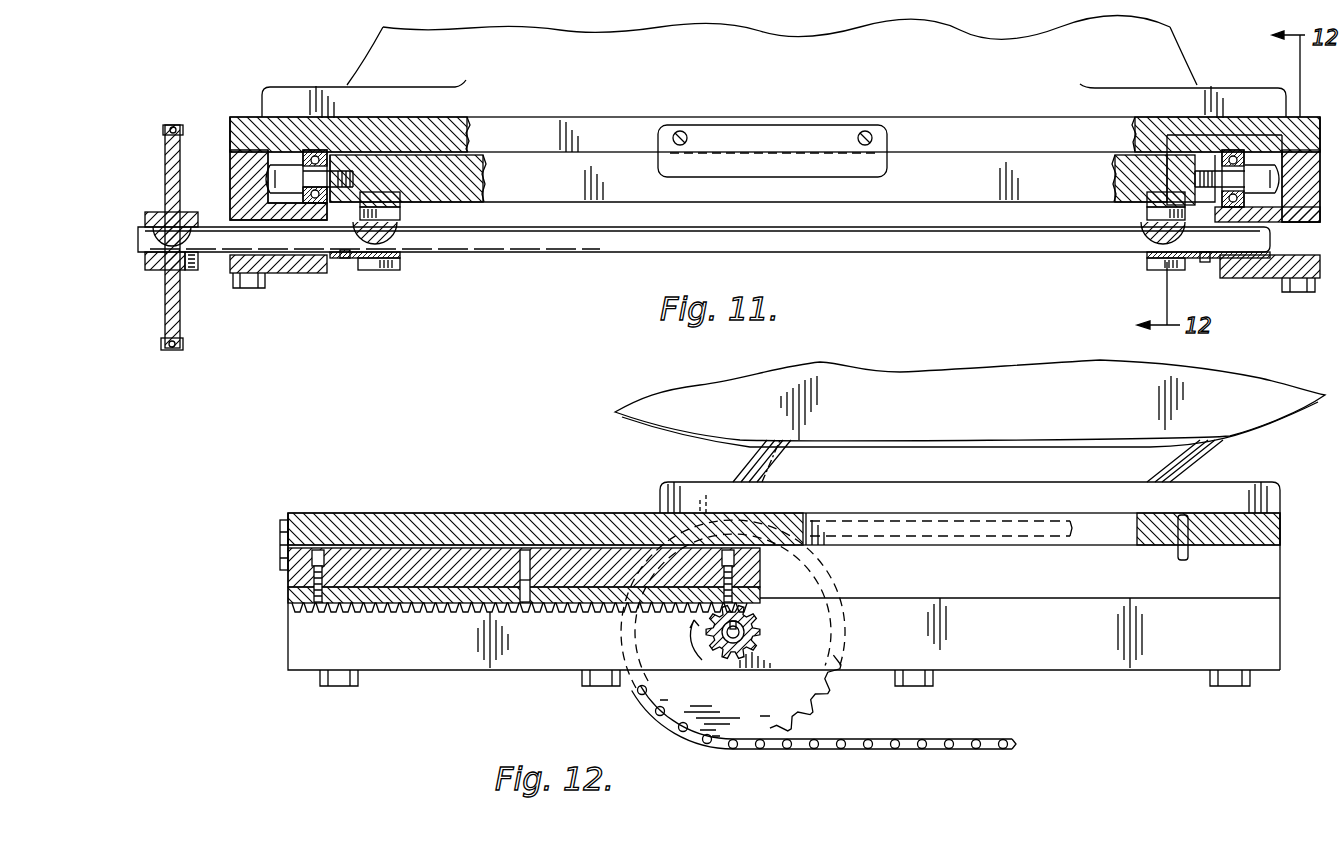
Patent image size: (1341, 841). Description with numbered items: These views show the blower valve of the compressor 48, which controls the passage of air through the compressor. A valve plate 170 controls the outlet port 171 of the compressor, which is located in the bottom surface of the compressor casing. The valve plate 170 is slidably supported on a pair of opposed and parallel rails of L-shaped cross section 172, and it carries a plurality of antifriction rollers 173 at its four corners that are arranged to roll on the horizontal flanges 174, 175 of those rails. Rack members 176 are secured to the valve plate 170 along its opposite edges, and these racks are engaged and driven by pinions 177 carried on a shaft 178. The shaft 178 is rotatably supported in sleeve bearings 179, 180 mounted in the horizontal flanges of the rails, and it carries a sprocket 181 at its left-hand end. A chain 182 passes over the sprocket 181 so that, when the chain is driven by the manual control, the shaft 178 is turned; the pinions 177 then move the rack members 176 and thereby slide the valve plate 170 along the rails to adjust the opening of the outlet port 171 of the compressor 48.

In FIG. 11, the compressor 48 is at (712, 73).
In FIG. 12, the compressor 48 is at (1022, 397).
In FIG. 11, the valve plate 170 is at (582, 204).
In FIG. 12, the valve plate 170 is at (410, 548).
In FIG. 12, the outlet port 171 is at (1107, 535).
In FIG. 11, the rail of L-shaped cross section 172 is at (232, 140).
In FIG. 12, the rail of L-shaped cross section 172 is at (1088, 579).
In FIG. 11, the antifriction rollers 173 is at (313, 156).
In FIG. 11, the horizontal flange 174 is at (287, 275).
In FIG. 12, the horizontal flange 174 is at (1013, 588).
In FIG. 11, the horizontal flange 175 is at (1273, 215).
In FIG. 11, the rack members 176 is at (402, 200).
In FIG. 12, the rack members 176 is at (420, 610).
In FIG. 11, the pinions 177 is at (400, 262).
In FIG. 12, the pinions 177 is at (762, 631).
In FIG. 11, the shaft 178 is at (516, 255).
In FIG. 12, the shaft 178 is at (752, 652).
In FIG. 11, the sleeve bearing 179 is at (340, 262).
In FIG. 11, the sleeve bearing 180 is at (1216, 266).
In FIG. 11, the sprocket 181 is at (182, 292).
In FIG. 12, the sprocket 181 is at (663, 690).
In FIG. 11, the chain 182 is at (186, 346).
In FIG. 12, the chain 182 is at (865, 750).